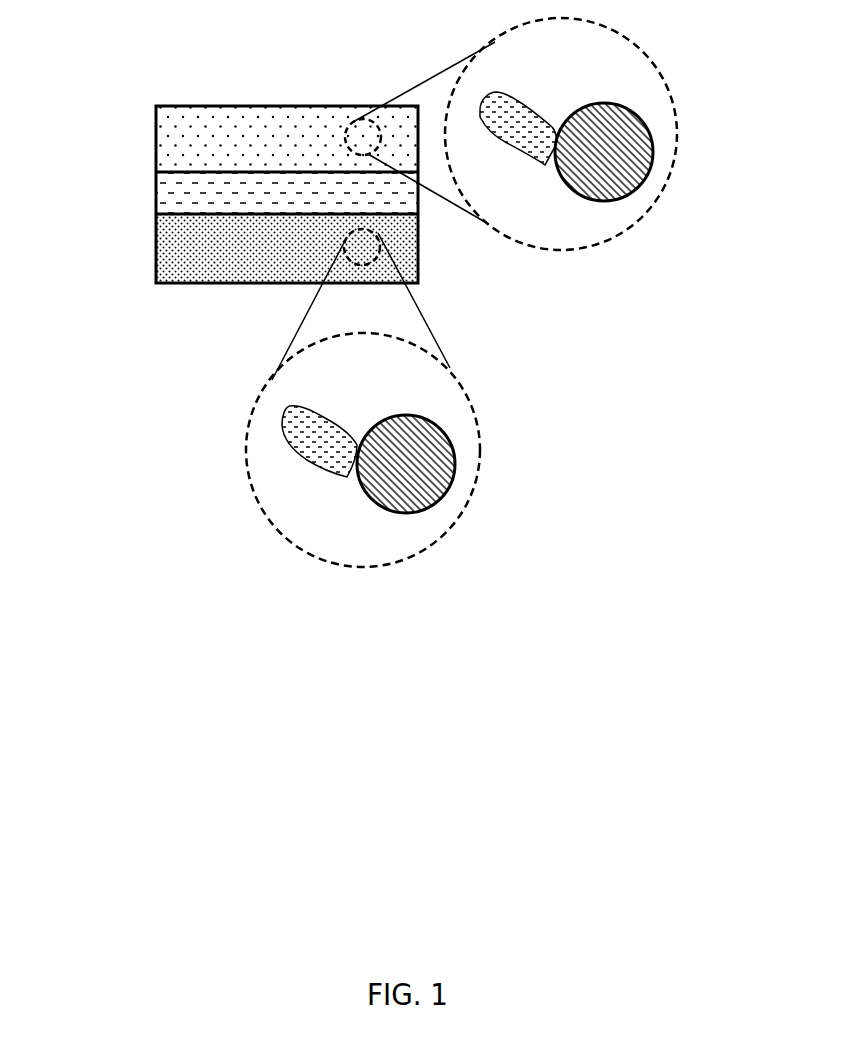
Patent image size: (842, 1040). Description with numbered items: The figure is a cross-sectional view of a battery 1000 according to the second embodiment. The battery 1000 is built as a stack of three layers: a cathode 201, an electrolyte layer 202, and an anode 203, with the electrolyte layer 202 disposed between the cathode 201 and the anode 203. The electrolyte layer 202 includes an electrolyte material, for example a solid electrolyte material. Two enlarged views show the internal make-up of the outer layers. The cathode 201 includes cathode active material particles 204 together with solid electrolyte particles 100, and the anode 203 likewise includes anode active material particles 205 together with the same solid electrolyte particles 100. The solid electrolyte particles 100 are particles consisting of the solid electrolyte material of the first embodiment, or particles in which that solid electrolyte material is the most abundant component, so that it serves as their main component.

The battery 1000 is at (230, 157).
The cathode 201 is at (190, 125).
The electrolyte layer 202 is at (190, 193).
The anode 203 is at (190, 248).
The cathode active material particles 204 is at (617, 153).
The anode active material particles 205 is at (453, 460).
The solid electrolyte particles 100 is at (533, 145).